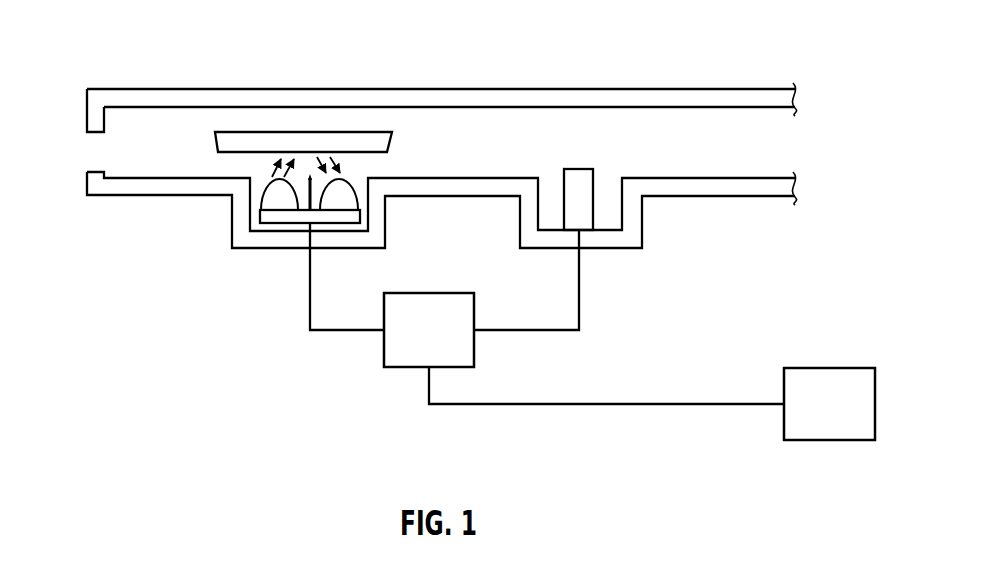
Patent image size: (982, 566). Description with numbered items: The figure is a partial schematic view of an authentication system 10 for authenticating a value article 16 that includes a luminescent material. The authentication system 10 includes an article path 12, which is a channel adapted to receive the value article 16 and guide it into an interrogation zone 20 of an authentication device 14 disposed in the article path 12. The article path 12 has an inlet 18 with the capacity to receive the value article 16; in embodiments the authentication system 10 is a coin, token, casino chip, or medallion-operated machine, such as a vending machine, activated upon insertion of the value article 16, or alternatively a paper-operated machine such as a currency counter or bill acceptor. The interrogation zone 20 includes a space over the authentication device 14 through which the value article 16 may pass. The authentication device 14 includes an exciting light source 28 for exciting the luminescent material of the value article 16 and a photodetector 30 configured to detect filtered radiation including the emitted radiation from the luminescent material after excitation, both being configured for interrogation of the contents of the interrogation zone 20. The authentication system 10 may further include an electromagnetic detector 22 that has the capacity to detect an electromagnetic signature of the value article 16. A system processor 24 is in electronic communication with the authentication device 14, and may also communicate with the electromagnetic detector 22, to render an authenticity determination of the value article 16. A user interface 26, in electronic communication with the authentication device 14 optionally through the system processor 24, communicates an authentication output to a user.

The authentication system 10 is at (783, 41).
The article path 12 is at (421, 103).
The authentication device 14 is at (263, 224).
The value article 16 is at (350, 132).
The inlet 18 is at (96, 134).
The interrogation zone 20 is at (259, 184).
The electromagnetic detector 22 is at (580, 168).
The system processor 24 is at (443, 293).
The user interface 26 is at (844, 368).
The exciting light source 28 is at (300, 200).
The photodetector 30 is at (358, 200).